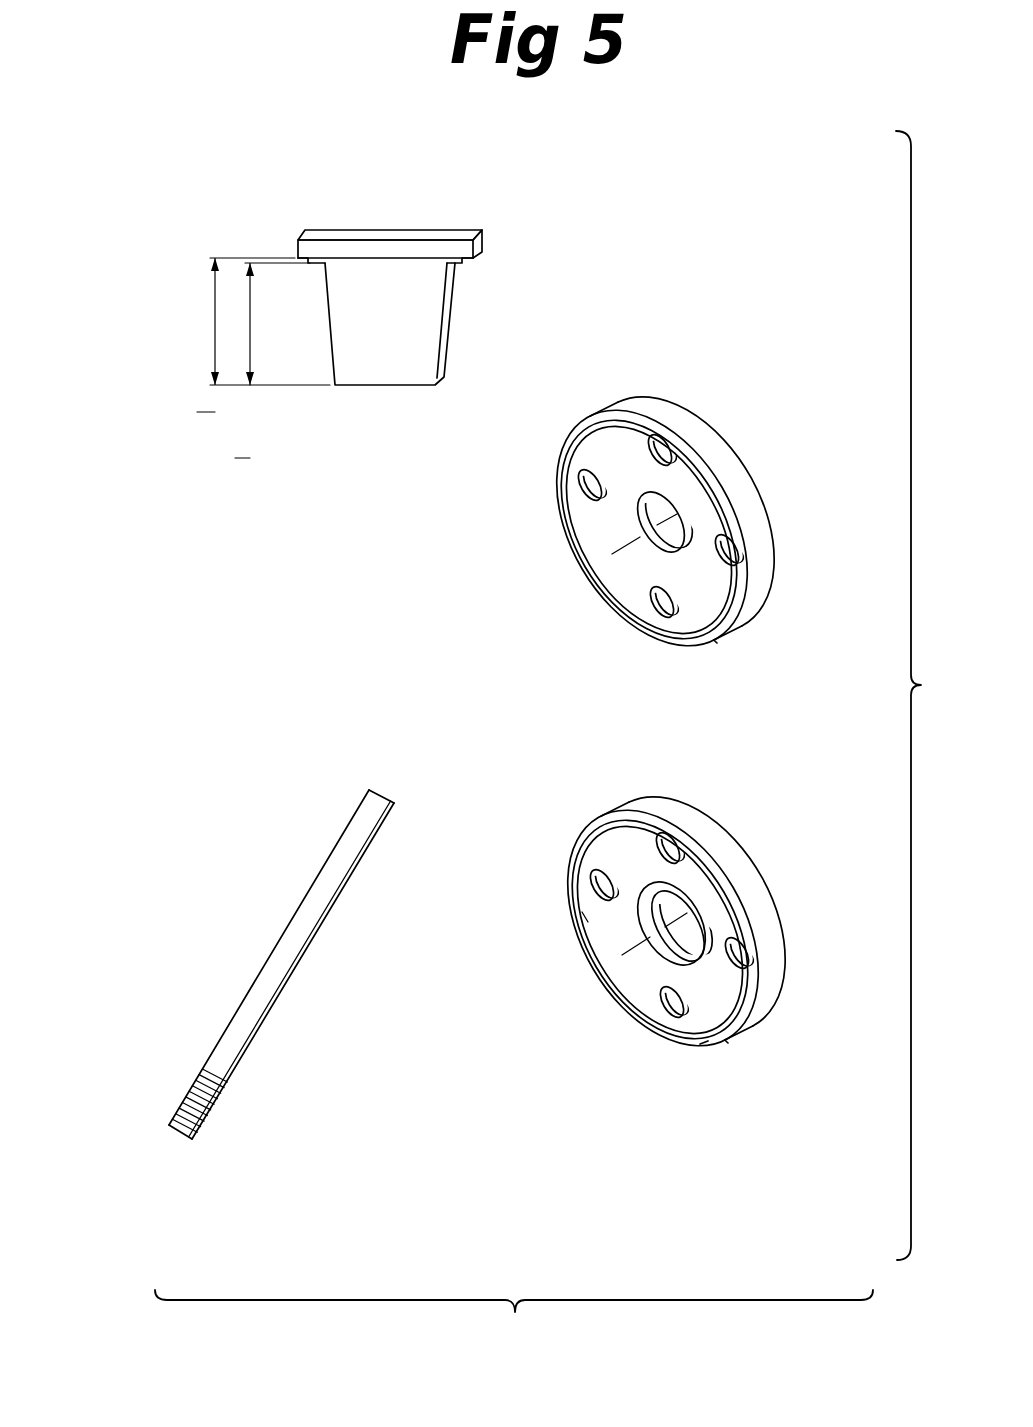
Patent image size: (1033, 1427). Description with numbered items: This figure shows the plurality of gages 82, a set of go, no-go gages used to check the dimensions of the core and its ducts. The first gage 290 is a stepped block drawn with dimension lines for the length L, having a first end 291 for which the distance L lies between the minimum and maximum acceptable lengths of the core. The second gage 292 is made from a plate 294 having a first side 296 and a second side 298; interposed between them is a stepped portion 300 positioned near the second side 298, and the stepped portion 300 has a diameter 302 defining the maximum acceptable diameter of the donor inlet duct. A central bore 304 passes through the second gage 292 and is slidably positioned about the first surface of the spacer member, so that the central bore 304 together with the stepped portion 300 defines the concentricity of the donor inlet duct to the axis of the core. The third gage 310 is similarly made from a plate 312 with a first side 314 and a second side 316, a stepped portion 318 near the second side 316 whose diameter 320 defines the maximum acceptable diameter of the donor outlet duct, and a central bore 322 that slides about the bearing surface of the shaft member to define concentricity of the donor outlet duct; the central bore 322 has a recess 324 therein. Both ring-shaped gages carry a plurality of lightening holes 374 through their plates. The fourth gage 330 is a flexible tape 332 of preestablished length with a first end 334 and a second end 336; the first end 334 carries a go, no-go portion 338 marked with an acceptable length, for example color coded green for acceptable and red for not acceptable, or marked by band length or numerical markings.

The plurality of gages 82 is at (619, 228).
The first gage 290 is at (421, 196).
The first end 291 is at (405, 386).
The second gage 292 is at (684, 366).
The plate 294 is at (592, 414).
The first side 296 is at (751, 468).
The second side 298 is at (712, 645).
The stepped portion 300 is at (577, 523).
The diameter 302 is at (592, 545).
The central bore 304 is at (662, 552).
The lightening holes 374 is at (720, 545).
The third gage 310 is at (747, 786).
The plate 312 is at (603, 814).
The first side 314 is at (758, 862).
The second side 316 is at (723, 1046).
The stepped portion 318 is at (600, 966).
The diameter 320 is at (581, 871).
The central bore 322 is at (676, 964).
The recess 324 is at (706, 1042).
The fourth gage 330 is at (254, 934).
The flexible tape 332 is at (307, 949).
The first end 334 is at (169, 1131).
The second end 336 is at (384, 788).
The go, no-go portion 338 is at (208, 1094).